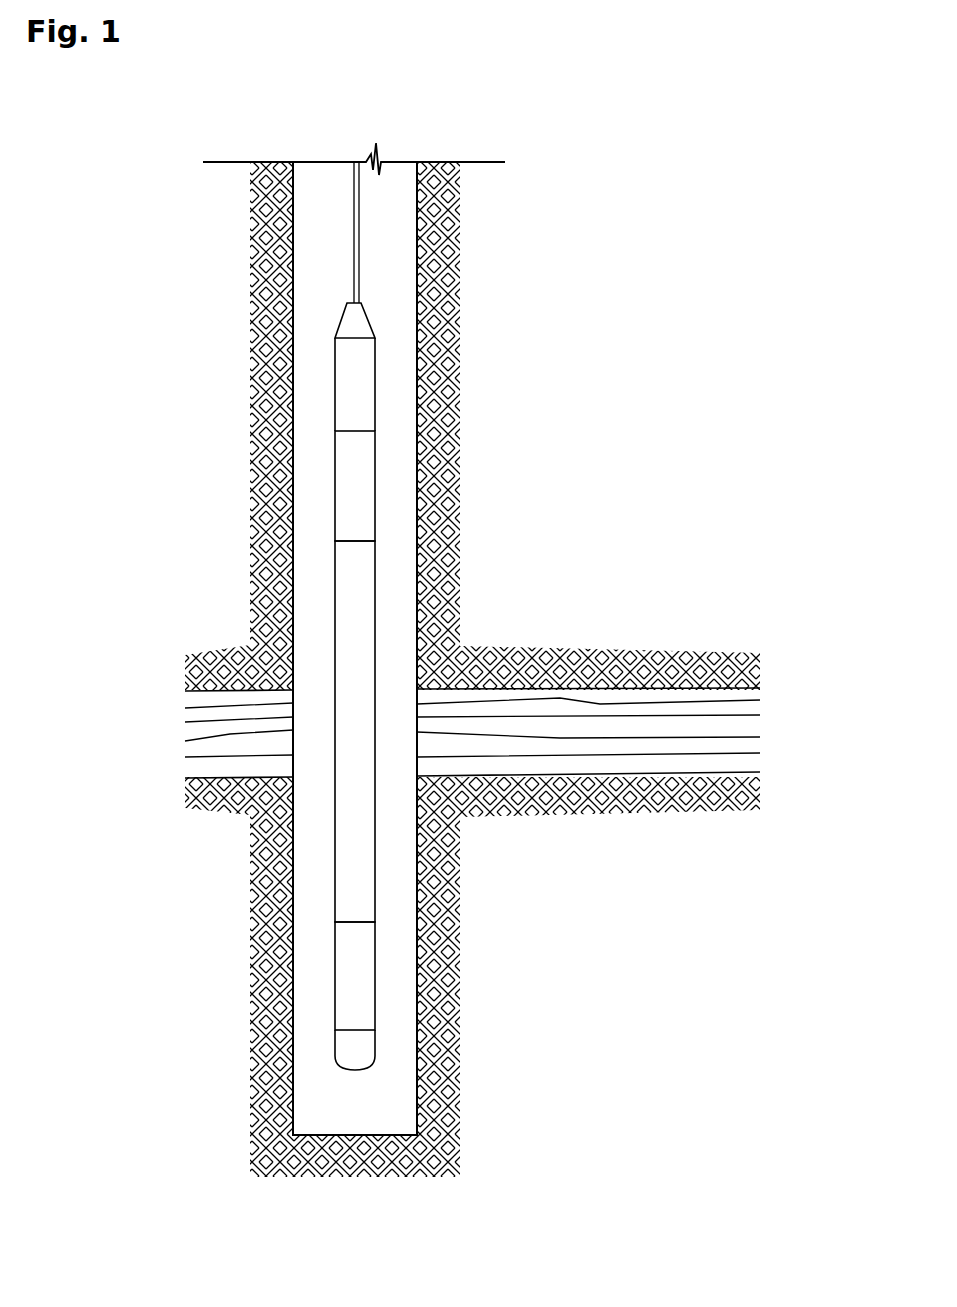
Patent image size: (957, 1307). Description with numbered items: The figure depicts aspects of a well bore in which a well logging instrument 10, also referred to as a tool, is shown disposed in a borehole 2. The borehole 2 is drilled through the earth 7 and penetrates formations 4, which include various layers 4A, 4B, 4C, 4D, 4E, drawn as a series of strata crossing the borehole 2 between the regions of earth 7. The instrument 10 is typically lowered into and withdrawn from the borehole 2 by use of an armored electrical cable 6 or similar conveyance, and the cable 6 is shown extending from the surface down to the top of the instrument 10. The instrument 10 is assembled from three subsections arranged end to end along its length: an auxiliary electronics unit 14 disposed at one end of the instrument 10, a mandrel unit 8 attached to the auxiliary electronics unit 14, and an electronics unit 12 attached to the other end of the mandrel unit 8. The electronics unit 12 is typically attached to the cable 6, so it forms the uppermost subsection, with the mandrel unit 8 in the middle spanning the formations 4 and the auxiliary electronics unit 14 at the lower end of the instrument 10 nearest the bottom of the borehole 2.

The borehole 2 is at (405, 228).
The formations 4 is at (475, 738).
The layer 4A is at (762, 690).
The layer 4B is at (762, 710).
The layer 4C is at (755, 727).
The layer 4D is at (755, 745).
The layer 4E is at (755, 763).
The armored electrical cable 6 is at (357, 237).
The earth 7 is at (445, 985).
The mandrel unit 8 is at (350, 652).
The well logging instrument 10 is at (351, 686).
The electronics unit 12 is at (345, 465).
The auxiliary electronics unit 14 is at (345, 968).